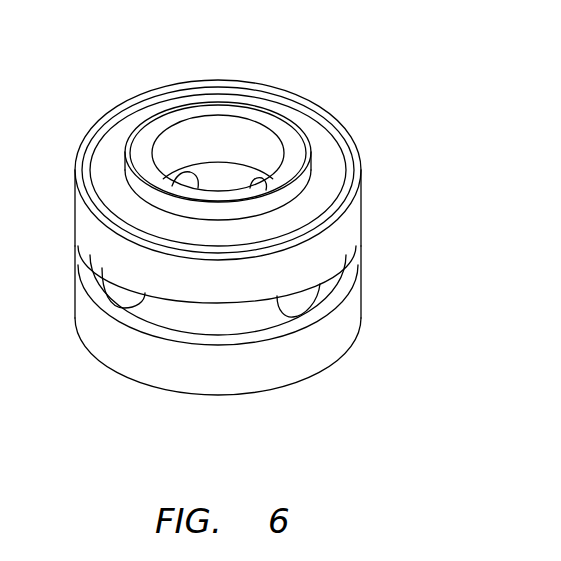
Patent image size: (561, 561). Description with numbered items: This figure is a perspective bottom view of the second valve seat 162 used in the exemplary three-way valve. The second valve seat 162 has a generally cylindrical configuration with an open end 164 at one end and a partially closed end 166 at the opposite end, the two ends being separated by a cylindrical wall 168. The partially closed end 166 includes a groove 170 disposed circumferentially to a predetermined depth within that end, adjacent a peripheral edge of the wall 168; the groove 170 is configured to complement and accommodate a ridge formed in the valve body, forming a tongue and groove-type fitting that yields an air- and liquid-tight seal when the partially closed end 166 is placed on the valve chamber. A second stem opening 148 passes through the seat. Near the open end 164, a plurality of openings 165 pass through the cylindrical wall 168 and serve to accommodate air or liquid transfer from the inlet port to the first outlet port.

The second valve seat 162 is at (360, 57).
The second stem opening 148 is at (203, 137).
The partially closed end 166 is at (292, 153).
The groove 170 is at (330, 182).
The cylindrical wall 168 is at (352, 313).
The openings 165 is at (123, 295).
The open end 164 is at (256, 394).